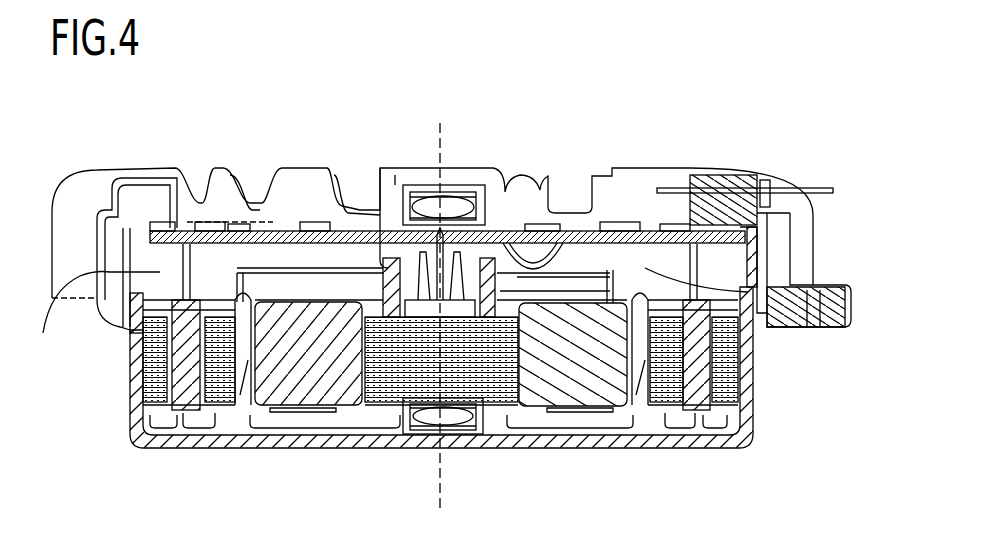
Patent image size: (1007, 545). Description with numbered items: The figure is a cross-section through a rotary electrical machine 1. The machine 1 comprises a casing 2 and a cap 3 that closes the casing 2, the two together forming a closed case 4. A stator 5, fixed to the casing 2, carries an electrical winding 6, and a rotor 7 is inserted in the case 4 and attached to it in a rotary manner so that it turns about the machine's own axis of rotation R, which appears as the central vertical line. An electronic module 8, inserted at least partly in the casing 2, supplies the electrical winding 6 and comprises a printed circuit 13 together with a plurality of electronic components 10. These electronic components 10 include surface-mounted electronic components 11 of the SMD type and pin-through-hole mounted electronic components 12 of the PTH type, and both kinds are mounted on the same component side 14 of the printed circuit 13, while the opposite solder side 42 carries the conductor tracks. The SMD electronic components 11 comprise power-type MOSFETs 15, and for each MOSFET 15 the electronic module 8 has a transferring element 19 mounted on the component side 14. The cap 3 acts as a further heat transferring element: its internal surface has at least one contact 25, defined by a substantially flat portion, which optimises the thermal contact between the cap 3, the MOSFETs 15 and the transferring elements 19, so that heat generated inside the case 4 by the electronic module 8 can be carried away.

The rotary electrical machine 1 is at (712, 130).
The casing 2 is at (130, 443).
The cap 3 is at (292, 168).
The case 4 is at (813, 255).
The stator 5 is at (700, 412).
The electrical winding 6 is at (235, 383).
The rotor 7 is at (613, 280).
The electronic module 8 is at (725, 262).
The electronic components 10 is at (398, 168).
The surface-mounted electronic components 11 is at (218, 231).
The pin-through-hole mounted electronic components 12 is at (530, 248).
The printed circuit 13 is at (60, 302).
The component side 14 is at (551, 250).
The MOSFETs 15 is at (218, 231).
The transferring elements 19 is at (207, 225).
The contact 25 is at (370, 208).
The solder side 42 is at (752, 294).
The axis of rotation R is at (440, 143).